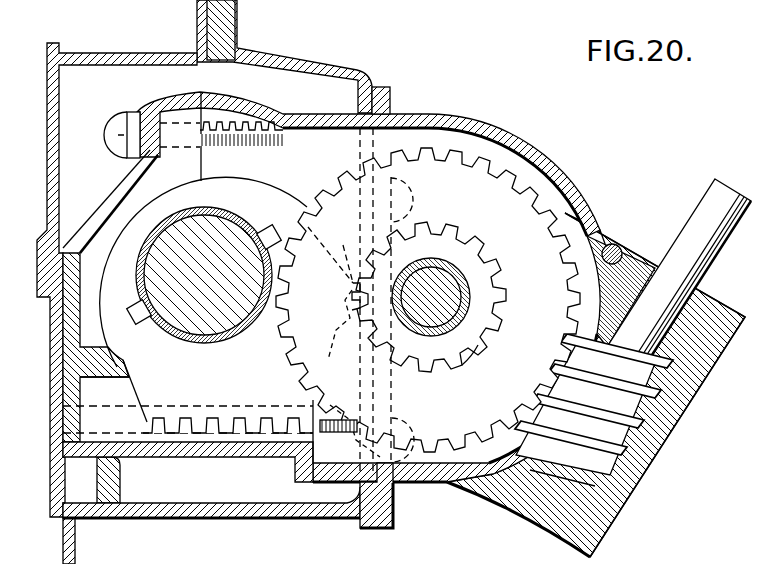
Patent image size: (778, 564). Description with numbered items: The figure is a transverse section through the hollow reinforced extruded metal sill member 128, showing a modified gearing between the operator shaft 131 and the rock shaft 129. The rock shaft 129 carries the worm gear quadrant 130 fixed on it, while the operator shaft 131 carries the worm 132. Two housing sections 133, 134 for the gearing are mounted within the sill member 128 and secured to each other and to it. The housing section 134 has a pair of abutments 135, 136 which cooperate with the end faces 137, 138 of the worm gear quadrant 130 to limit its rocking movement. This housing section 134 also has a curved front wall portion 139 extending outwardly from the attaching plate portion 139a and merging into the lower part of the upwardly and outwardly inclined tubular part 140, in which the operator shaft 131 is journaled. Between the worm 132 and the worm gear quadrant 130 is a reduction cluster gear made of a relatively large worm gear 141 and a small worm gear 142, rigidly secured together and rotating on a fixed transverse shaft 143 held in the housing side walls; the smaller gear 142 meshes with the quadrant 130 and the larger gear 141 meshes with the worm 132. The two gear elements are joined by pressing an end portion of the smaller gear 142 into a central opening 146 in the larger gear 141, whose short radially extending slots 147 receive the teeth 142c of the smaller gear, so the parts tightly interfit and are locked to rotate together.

The sill member 128 is at (291, 47).
The rock shaft 129 is at (235, 213).
The worm gear quadrant 130 is at (224, 421).
The operator shaft 131 is at (690, 292).
The worm 132 is at (653, 418).
The housing section 133 is at (102, 205).
The housing section 134 is at (503, 116).
The abutment 135 is at (153, 151).
The abutment 136 is at (102, 377).
The end face 137 is at (152, 423).
The end face 138 is at (344, 338).
The curved front wall portion 139 is at (560, 168).
The attaching plate portion 139a is at (387, 503).
The tubular part 140 is at (650, 467).
The worm gear 141 is at (530, 232).
The worm gear 142 is at (451, 360).
The teeth 142c is at (428, 220).
The transverse shaft 143 is at (473, 290).
The central opening 146 is at (480, 350).
The radially extending slots 147 is at (489, 232).